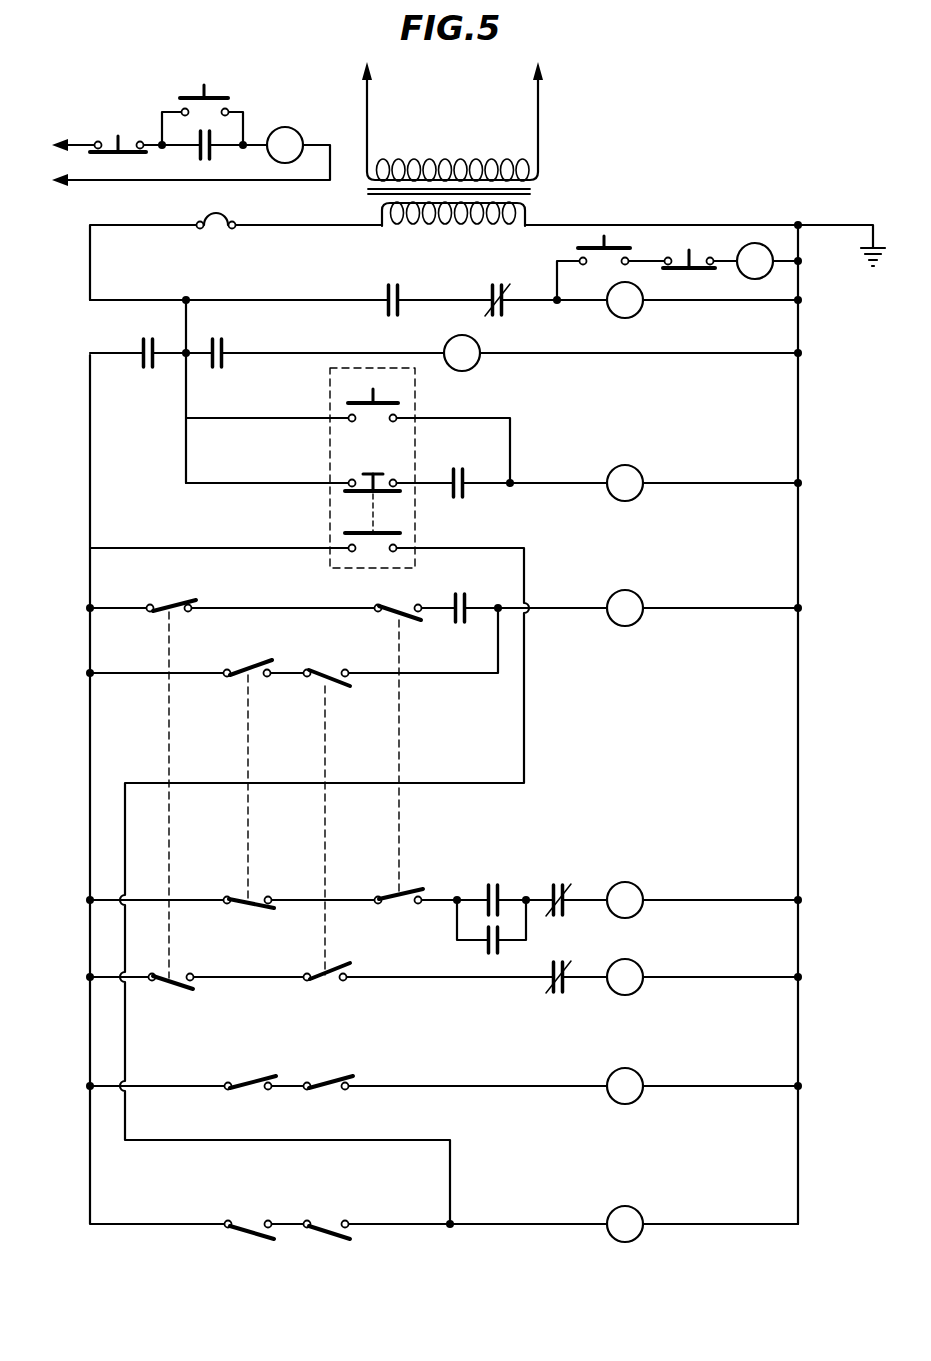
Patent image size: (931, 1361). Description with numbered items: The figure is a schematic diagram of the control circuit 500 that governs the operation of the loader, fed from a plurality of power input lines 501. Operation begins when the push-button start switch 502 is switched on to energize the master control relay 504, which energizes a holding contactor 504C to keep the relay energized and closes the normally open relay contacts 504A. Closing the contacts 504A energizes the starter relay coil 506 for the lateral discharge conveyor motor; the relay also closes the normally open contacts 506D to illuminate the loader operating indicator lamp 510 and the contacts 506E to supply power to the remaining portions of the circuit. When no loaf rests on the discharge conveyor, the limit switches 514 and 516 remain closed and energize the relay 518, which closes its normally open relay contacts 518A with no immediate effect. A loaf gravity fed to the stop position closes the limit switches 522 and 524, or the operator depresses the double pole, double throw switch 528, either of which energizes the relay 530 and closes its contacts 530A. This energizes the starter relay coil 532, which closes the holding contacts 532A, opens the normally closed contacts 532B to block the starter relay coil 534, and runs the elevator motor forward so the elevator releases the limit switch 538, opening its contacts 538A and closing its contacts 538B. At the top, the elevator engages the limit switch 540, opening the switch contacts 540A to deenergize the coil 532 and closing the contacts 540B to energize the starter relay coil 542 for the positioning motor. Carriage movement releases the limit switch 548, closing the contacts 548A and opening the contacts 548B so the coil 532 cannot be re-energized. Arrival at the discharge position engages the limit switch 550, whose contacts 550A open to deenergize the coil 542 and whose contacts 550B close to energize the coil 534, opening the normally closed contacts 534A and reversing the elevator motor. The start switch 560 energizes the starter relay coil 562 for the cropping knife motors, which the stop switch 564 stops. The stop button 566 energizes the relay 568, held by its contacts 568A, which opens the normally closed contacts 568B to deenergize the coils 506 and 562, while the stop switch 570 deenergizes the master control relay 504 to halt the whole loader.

The control circuit 500 is at (712, 77).
The power input lines 501 is at (538, 95).
The push-button start switch 502 is at (214, 95).
The master control relay 504 is at (275, 127).
The relay contacts 504A is at (400, 290).
The holding contactor 504C is at (212, 155).
The starter relay coil 506 is at (637, 312).
The relay contacts 506D is at (222, 345).
The relay contacts 506E is at (142, 348).
The indicator lamp 510 is at (474, 367).
The limit switch 514 is at (248, 1083).
The limit switch 516 is at (333, 1077).
The relay 518 is at (607, 1100).
The relay contacts 518A is at (480, 575).
The limit switch 522 is at (258, 1240).
The limit switch 524 is at (333, 1238).
The double pole, double throw switch 528 is at (309, 796).
The relay 530 is at (638, 1240).
The relay contacts 530A is at (500, 888).
The starter relay coil 532 is at (638, 888).
The relay contacts 532A is at (486, 948).
The relay contacts 532B is at (572, 993).
The starter relay coil 534 is at (638, 992).
The relay coil contacts 534A is at (555, 885).
The limit switch 538 is at (370, 712).
The contacts 538A is at (345, 652).
The contacts 538B is at (323, 983).
The limit switch 540 is at (448, 712).
The switch contacts 540A is at (392, 896).
The switch contacts 540B is at (406, 607).
The starter relay coil 542 is at (645, 565).
The limit switch 548 is at (295, 712).
The switch contacts 548A is at (258, 660).
The switch contacts 548B is at (250, 898).
The limit switch 550 is at (215, 712).
The switch contacts 550A is at (187, 574).
The contacts 550B is at (174, 991).
The start switch 560 is at (592, 245).
The starter relay coil 562 is at (760, 243).
The stop switch 564 is at (678, 262).
The stop button 566 is at (348, 402).
The relay 568 is at (645, 443).
The relay contacts 568A is at (487, 444).
The relay contacts 568B is at (493, 290).
The stop switch 570 is at (112, 140).